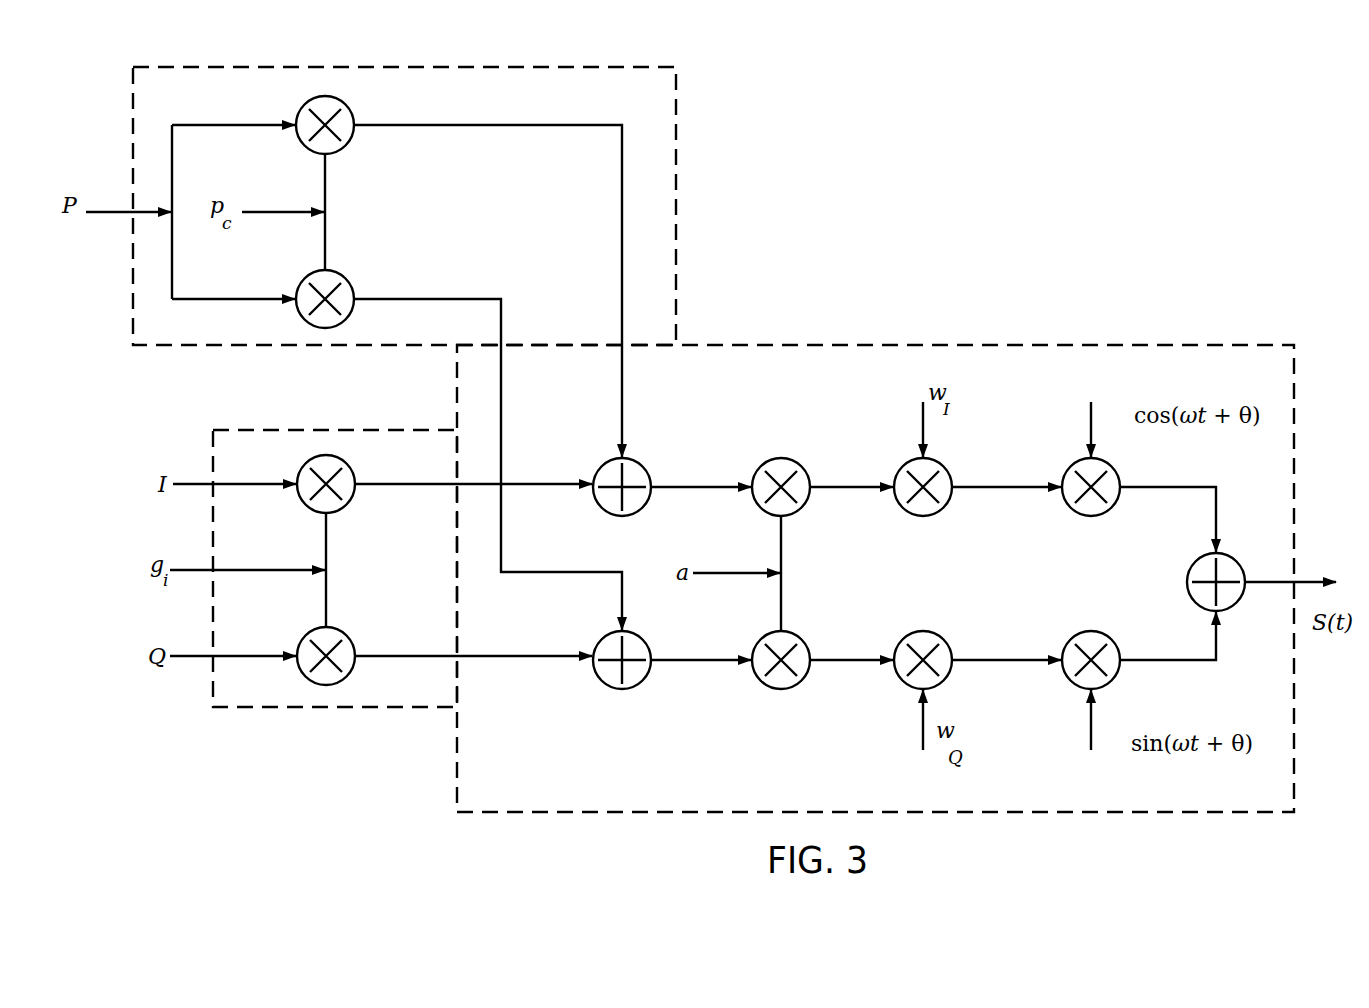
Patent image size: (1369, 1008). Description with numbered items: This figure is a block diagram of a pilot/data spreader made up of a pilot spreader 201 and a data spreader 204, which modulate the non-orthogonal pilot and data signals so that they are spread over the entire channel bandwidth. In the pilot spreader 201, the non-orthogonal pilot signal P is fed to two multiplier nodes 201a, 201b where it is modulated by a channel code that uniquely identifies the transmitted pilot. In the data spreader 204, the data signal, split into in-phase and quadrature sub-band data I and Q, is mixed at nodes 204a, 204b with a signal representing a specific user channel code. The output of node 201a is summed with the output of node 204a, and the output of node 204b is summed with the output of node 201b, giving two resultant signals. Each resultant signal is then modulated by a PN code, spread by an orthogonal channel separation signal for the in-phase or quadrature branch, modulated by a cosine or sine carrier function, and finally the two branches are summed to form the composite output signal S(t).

The pilot spreader 201 is at (404, 206).
The data spreader 204 is at (335, 568).
The node 201a is at (347, 108).
The node 201b is at (347, 282).
The node 204a is at (348, 468).
The node 204b is at (348, 640).